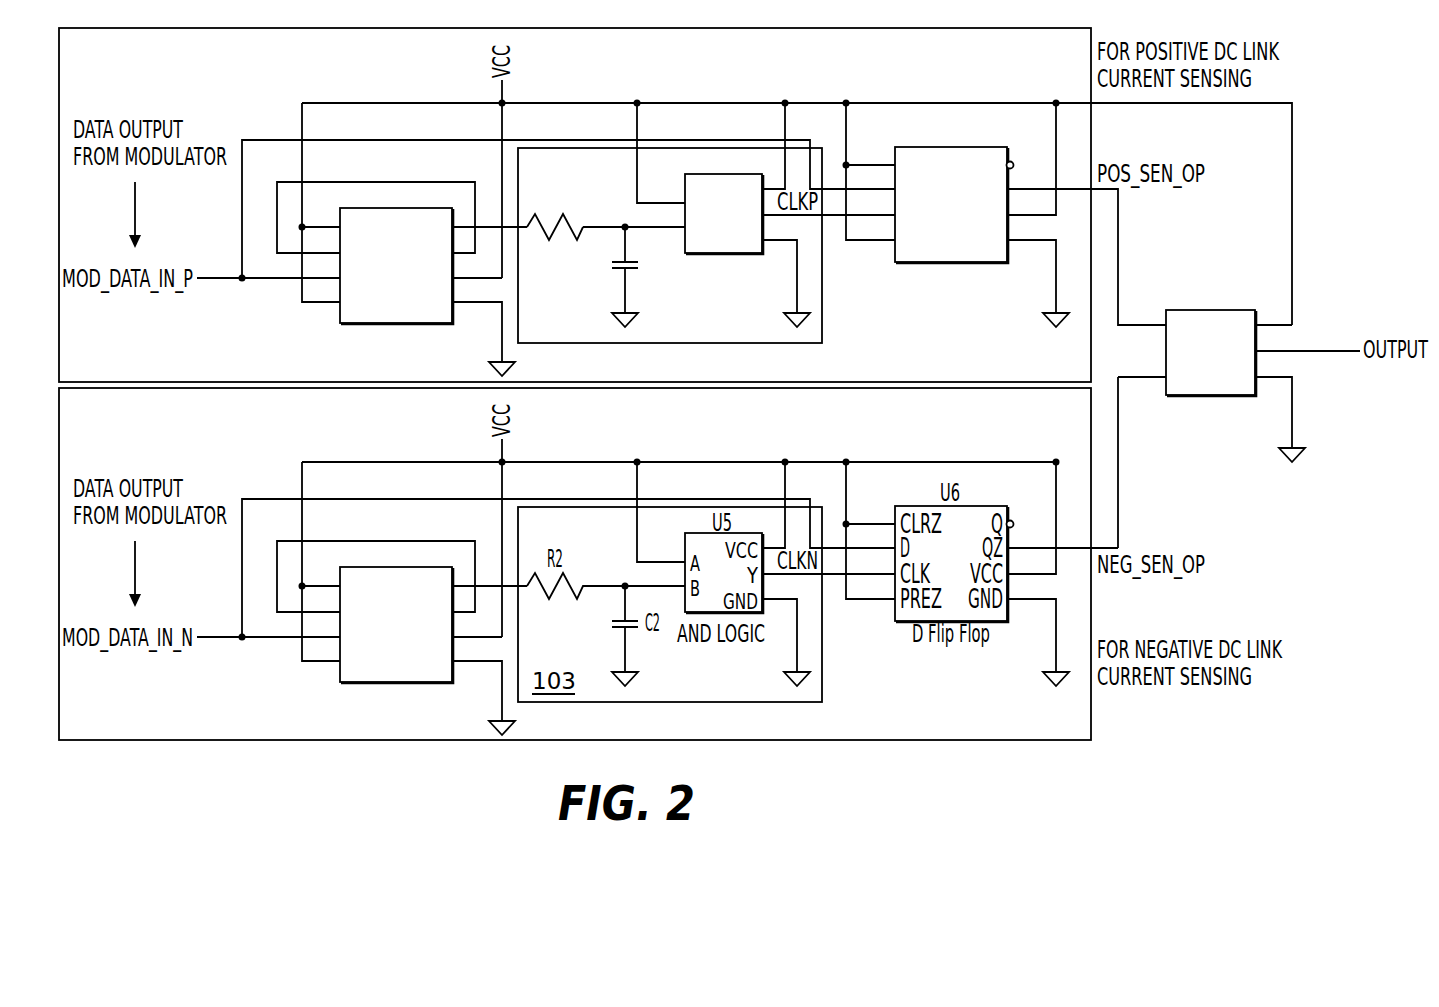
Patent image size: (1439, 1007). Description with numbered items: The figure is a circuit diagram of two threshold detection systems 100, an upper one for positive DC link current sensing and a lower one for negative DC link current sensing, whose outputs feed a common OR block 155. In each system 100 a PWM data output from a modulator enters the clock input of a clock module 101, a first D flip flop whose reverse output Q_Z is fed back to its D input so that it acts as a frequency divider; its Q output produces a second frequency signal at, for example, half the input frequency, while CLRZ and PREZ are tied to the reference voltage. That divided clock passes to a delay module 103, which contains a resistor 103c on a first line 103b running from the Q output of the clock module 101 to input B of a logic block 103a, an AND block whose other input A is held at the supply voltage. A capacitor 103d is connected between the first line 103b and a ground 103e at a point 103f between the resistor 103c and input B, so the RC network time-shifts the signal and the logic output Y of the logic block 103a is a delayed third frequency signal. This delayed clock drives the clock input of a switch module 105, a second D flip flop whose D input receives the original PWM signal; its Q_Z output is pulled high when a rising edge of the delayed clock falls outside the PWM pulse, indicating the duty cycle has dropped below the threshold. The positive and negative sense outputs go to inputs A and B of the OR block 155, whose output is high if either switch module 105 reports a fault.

The threshold detection system 100 is at (123, 78).
The clock module 101 is at (342, 317).
The delay module 103 is at (575, 335).
The logic block 103a is at (700, 187).
The first line 103b is at (602, 227).
The resistor 103c is at (548, 237).
The capacitor 103d is at (633, 267).
The ground 103e is at (623, 337).
The point 103f is at (625, 227).
The switch module 105 is at (995, 263).
The OR block 155 is at (1243, 312).